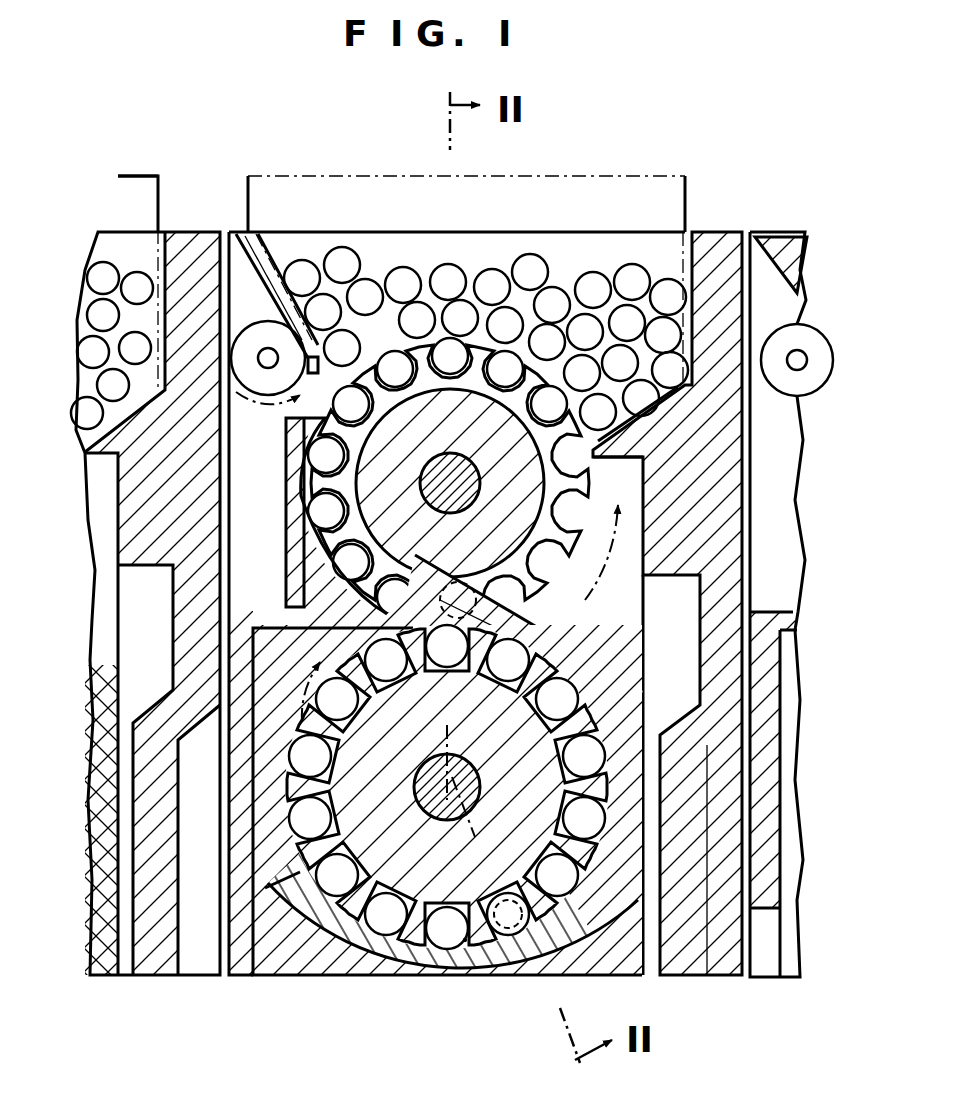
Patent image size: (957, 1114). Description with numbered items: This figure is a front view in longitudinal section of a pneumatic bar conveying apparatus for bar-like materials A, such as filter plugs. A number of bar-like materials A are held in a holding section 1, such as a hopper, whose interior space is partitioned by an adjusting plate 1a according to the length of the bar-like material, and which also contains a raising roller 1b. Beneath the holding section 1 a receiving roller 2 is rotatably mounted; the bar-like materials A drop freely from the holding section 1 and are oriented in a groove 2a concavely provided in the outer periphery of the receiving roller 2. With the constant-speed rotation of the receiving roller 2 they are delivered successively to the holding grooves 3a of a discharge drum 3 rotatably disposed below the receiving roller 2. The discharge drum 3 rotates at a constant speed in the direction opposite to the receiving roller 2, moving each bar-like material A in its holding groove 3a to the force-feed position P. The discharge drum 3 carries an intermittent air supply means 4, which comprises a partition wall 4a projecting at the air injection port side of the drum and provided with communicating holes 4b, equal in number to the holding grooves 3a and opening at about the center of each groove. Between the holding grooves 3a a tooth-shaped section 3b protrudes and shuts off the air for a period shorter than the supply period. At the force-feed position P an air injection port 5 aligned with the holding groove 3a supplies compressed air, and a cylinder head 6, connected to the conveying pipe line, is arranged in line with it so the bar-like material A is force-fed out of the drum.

The holding section 1 is at (432, 255).
The adjusting plate 1a is at (612, 176).
The raising roller 1b is at (262, 345).
The receiving roller 2 is at (548, 578).
The groove 2a is at (286, 440).
The discharge drum 3 is at (600, 703).
The holding grooves 3a is at (605, 827).
The tooth-shaped section 3b is at (372, 652).
The intermittent air supply means 4 is at (413, 1015).
The partition wall 4a is at (605, 775).
The communicating holes 4b is at (292, 762).
The air injection port 5 is at (508, 930).
The cylinder head 6 is at (440, 955).
The bar-like material A is at (556, 300).
The force-feed position P is at (466, 942).